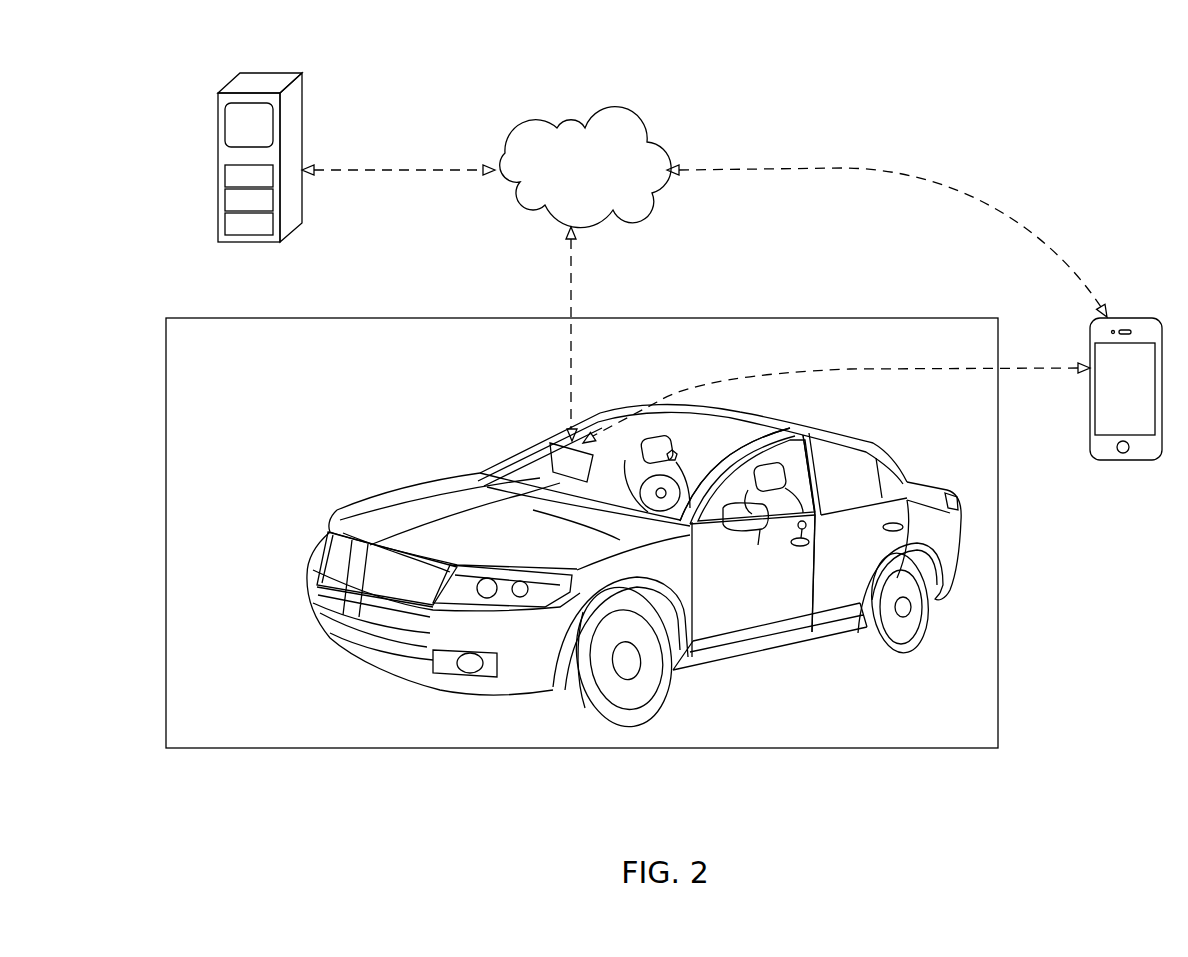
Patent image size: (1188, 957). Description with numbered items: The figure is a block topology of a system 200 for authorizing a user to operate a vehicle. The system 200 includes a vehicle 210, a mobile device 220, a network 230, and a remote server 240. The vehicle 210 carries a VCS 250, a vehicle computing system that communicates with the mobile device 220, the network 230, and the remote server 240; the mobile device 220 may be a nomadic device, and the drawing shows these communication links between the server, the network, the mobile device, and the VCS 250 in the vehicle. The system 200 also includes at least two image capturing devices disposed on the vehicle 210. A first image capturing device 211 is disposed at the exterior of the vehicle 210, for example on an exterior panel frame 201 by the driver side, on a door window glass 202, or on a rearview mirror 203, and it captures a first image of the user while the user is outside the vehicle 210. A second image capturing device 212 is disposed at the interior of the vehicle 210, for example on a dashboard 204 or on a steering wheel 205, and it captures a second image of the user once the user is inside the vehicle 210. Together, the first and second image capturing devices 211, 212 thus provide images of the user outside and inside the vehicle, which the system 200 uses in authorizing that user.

The system 200 is at (843, 73).
The remote server 240 is at (272, 73).
The network 230 is at (613, 105).
The mobile device 220 is at (1125, 316).
The VCS 250 is at (552, 452).
The vehicle 210 is at (870, 438).
The exterior panel frame 201 is at (748, 638).
The door window glass 202 is at (778, 450).
The rearview mirror 203 is at (737, 537).
The dashboard 204 is at (560, 506).
The steering wheel 205 is at (681, 505).
The first image capturing device 211 is at (817, 523).
The second image capturing device 212 is at (690, 497).